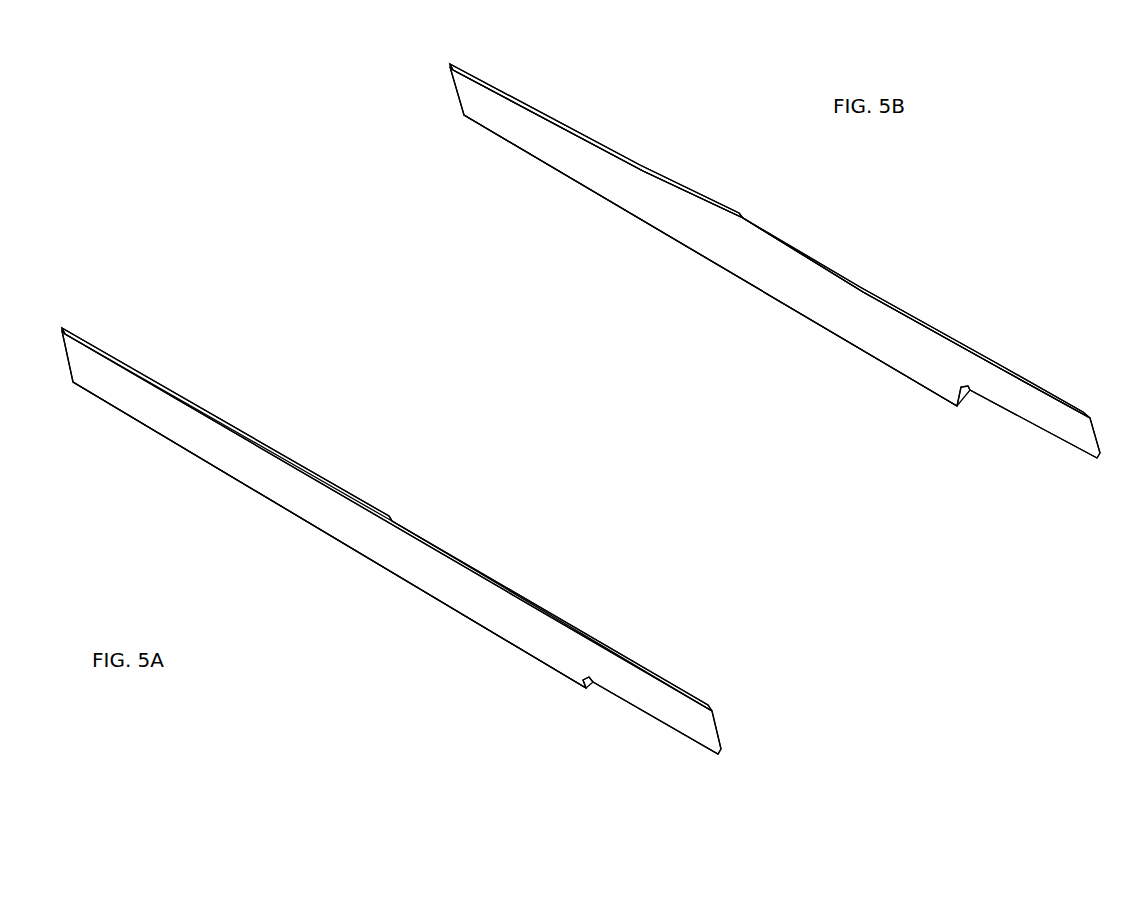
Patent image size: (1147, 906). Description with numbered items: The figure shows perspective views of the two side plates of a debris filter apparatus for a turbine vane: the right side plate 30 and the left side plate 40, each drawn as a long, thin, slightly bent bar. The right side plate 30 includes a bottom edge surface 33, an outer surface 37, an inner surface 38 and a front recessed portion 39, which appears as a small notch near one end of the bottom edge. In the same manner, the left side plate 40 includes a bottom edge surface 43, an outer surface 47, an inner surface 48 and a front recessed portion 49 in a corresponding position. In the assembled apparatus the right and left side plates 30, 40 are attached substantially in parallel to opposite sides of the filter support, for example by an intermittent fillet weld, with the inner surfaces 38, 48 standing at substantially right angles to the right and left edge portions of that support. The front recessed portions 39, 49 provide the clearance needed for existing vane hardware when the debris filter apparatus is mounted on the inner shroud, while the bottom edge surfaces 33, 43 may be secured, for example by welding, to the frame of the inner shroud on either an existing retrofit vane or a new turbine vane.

In FIG. 5B, the right side plate 30 is at (711, 116).
In FIG. 5B, the bottom edge surface 33 is at (768, 298).
In FIG. 5B, the outer surface 37 is at (847, 273).
In FIG. 5B, the inner surface 38 is at (663, 208).
In FIG. 5B, the front recessed portion 39 is at (968, 392).
In FIG. 5A, the left side plate 40 is at (103, 268).
In FIG. 5A, the bottom edge surface 43 is at (357, 553).
In FIG. 5A, the outer surface 47 is at (188, 442).
In FIG. 5A, the inner surface 48 is at (282, 457).
In FIG. 5A, the front recessed portion 49 is at (592, 687).